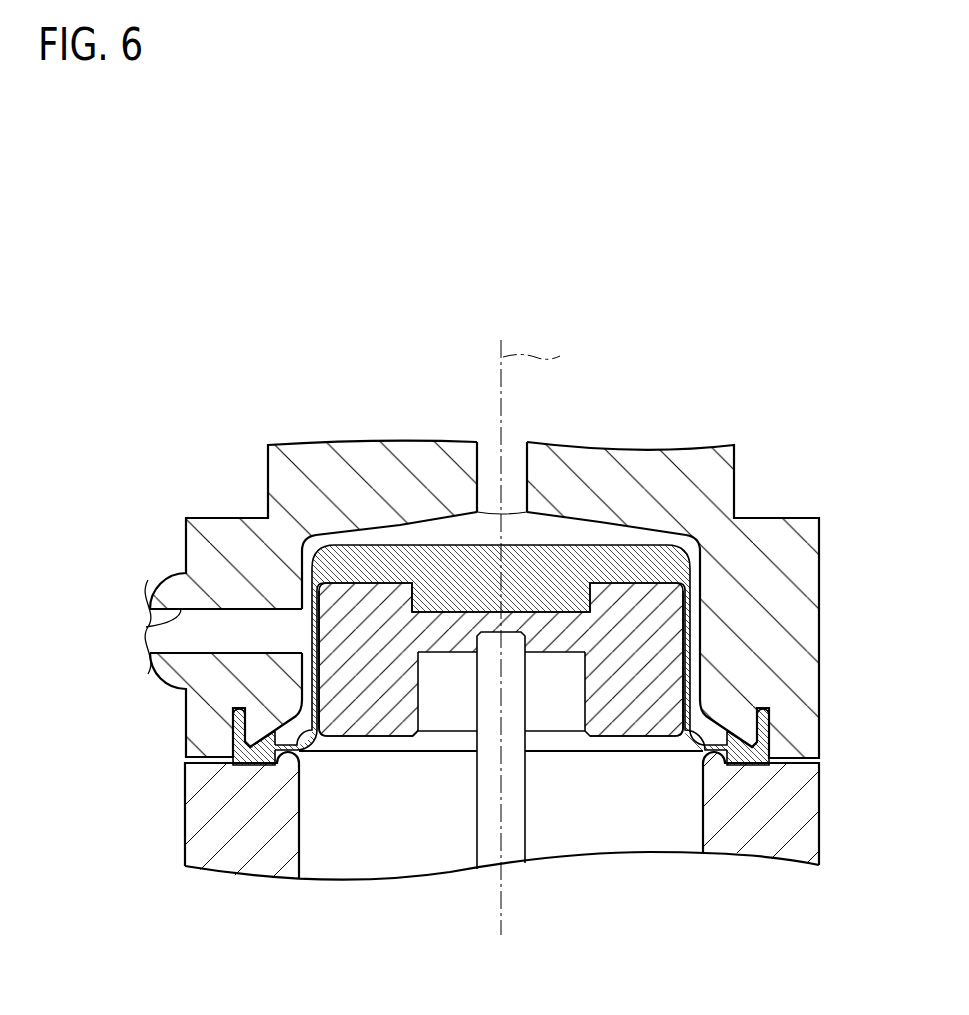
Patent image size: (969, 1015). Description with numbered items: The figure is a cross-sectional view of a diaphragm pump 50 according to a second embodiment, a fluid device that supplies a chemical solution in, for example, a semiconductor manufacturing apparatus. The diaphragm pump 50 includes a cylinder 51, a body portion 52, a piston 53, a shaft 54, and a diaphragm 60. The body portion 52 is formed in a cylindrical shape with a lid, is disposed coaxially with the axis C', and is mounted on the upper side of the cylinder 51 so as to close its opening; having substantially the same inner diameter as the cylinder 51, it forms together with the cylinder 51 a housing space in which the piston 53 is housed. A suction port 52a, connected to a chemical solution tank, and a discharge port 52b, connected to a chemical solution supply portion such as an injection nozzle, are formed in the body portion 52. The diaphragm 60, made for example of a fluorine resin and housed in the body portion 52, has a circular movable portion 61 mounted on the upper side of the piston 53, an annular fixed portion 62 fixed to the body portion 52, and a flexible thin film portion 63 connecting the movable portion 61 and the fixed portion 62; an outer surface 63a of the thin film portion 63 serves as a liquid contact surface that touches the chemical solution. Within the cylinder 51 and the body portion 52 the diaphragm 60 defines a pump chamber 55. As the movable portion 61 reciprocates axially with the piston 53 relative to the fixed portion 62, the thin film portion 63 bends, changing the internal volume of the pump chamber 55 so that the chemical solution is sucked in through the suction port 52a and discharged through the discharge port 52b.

The diaphragm pump 50 is at (293, 379).
The cylinder 51 is at (803, 795).
The body portion 52 is at (803, 572).
The suction port 52a is at (146, 627).
The discharge port 52b is at (478, 458).
The piston 53 is at (636, 722).
The shaft 54 is at (513, 820).
The pump chamber 55 is at (540, 512).
The diaphragm 60 is at (420, 529).
The movable portion 61 is at (463, 565).
The fixed portion 62 is at (257, 762).
The thin film portion 63 is at (688, 652).
The outer surface 63a is at (688, 692).